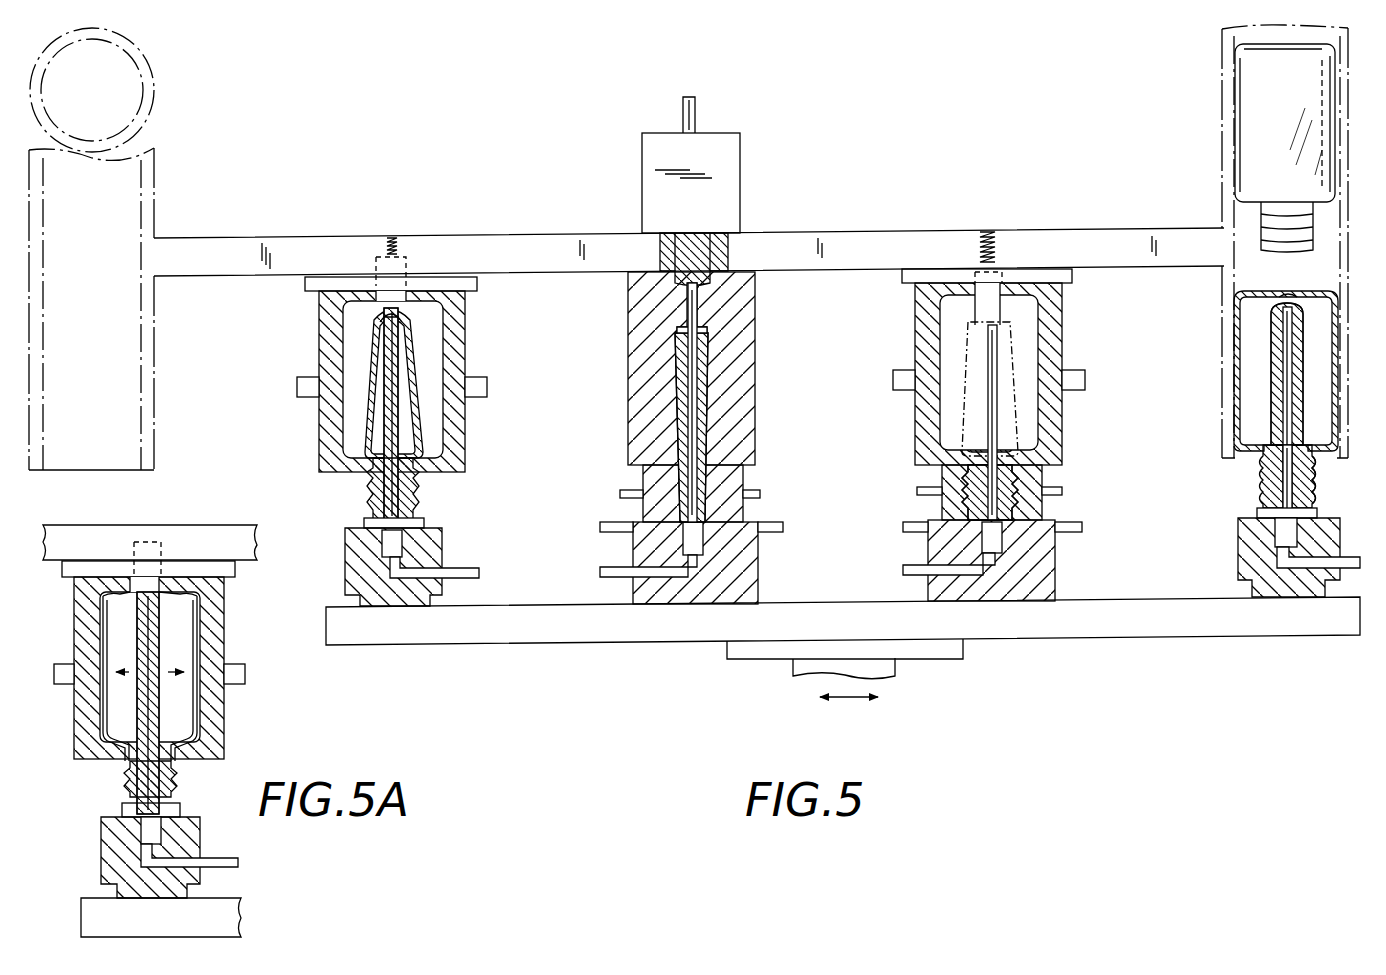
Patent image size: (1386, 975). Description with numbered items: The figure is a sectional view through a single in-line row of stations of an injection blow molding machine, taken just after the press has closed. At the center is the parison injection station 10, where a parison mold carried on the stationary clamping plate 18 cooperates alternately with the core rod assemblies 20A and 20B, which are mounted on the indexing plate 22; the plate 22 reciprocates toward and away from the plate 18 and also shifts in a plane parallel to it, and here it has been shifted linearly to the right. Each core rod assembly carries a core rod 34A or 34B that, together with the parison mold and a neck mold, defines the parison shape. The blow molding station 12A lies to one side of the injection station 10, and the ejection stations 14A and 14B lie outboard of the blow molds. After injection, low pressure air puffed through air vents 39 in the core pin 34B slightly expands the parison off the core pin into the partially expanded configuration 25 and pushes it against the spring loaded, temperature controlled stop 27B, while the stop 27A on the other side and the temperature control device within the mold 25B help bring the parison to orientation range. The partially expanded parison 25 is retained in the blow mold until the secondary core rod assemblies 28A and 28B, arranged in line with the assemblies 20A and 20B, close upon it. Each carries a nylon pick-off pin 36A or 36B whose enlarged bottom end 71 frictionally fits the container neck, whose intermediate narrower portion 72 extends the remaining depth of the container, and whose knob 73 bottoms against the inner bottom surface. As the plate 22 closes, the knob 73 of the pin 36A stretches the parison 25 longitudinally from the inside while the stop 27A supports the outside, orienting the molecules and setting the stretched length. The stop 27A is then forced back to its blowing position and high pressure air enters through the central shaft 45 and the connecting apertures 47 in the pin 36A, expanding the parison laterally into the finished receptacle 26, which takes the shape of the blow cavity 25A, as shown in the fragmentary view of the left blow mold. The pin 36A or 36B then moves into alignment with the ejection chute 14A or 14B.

The parison injection station 10 is at (772, 203).
The blow molding station 12A is at (311, 452).
The ejection station 14A is at (160, 199).
The ejection station 14B is at (1218, 123).
The clamping plate 18 is at (868, 247).
The core rod assembly 20A is at (626, 591).
The core rod assembly 20B is at (1060, 575).
The indexing plate 22 is at (1178, 630).
The partially expanded parison 25 is at (417, 432).
The blow cavity 25A is at (432, 372).
The mold 25B is at (1030, 346).
The receptacle 26 is at (1339, 349).
The stop 27A is at (394, 299).
The stop 27B is at (990, 298).
The secondary core rod assembly 28A is at (449, 550).
The secondary core rod assembly 28B is at (1235, 558).
The core rod 34A is at (702, 517).
The core pin 34B is at (1012, 516).
The pick-off pin 36A is at (403, 502).
The pick-off pin 36B is at (1280, 502).
The air vents 39 is at (1014, 443).
The central shaft 45 is at (383, 346).
The connecting apertures 47 is at (411, 321).
The enlarged bottom end 71 is at (1318, 477).
The intermediate narrower portion 72 is at (1298, 385).
The knob 73 is at (1284, 302).